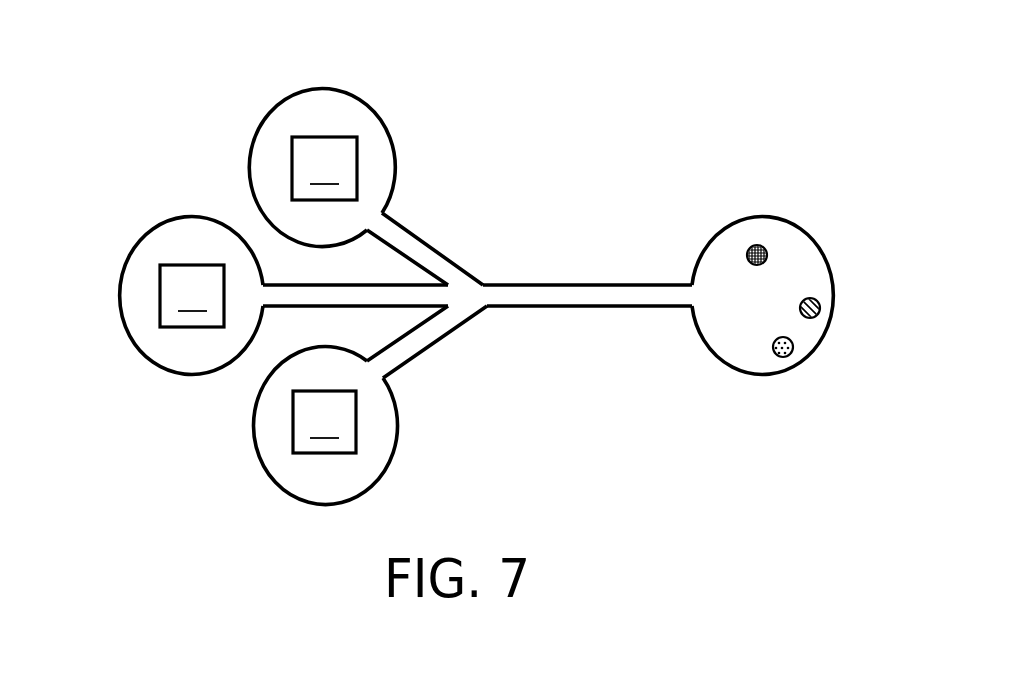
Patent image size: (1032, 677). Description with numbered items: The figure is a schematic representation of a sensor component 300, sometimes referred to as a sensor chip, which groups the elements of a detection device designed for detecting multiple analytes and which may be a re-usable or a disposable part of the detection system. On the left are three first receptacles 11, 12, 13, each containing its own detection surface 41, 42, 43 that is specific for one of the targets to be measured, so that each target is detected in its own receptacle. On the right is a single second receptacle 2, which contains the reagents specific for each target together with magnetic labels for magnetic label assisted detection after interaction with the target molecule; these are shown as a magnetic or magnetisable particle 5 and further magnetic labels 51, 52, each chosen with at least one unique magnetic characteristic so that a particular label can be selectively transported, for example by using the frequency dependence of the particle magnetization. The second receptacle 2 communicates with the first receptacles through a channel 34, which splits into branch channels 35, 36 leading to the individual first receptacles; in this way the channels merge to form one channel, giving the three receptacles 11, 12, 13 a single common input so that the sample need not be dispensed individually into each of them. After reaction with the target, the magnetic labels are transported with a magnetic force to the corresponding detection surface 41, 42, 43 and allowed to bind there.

The sensor component 300 is at (767, 60).
The first receptacle 11 is at (252, 168).
The first receptacle 12 is at (120, 293).
The first receptacle 13 is at (252, 422).
The detection surface 41 is at (324, 168).
The detection surface 42 is at (192, 296).
The detection surface 43 is at (324, 422).
The channel 34 is at (577, 280).
The channel 35 is at (437, 248).
The channel 36 is at (437, 343).
The second receptacle 2 is at (762, 377).
The magnetic label 51 is at (759, 247).
The magnetic label 52 is at (820, 307).
The magnetic label 5 is at (793, 347).